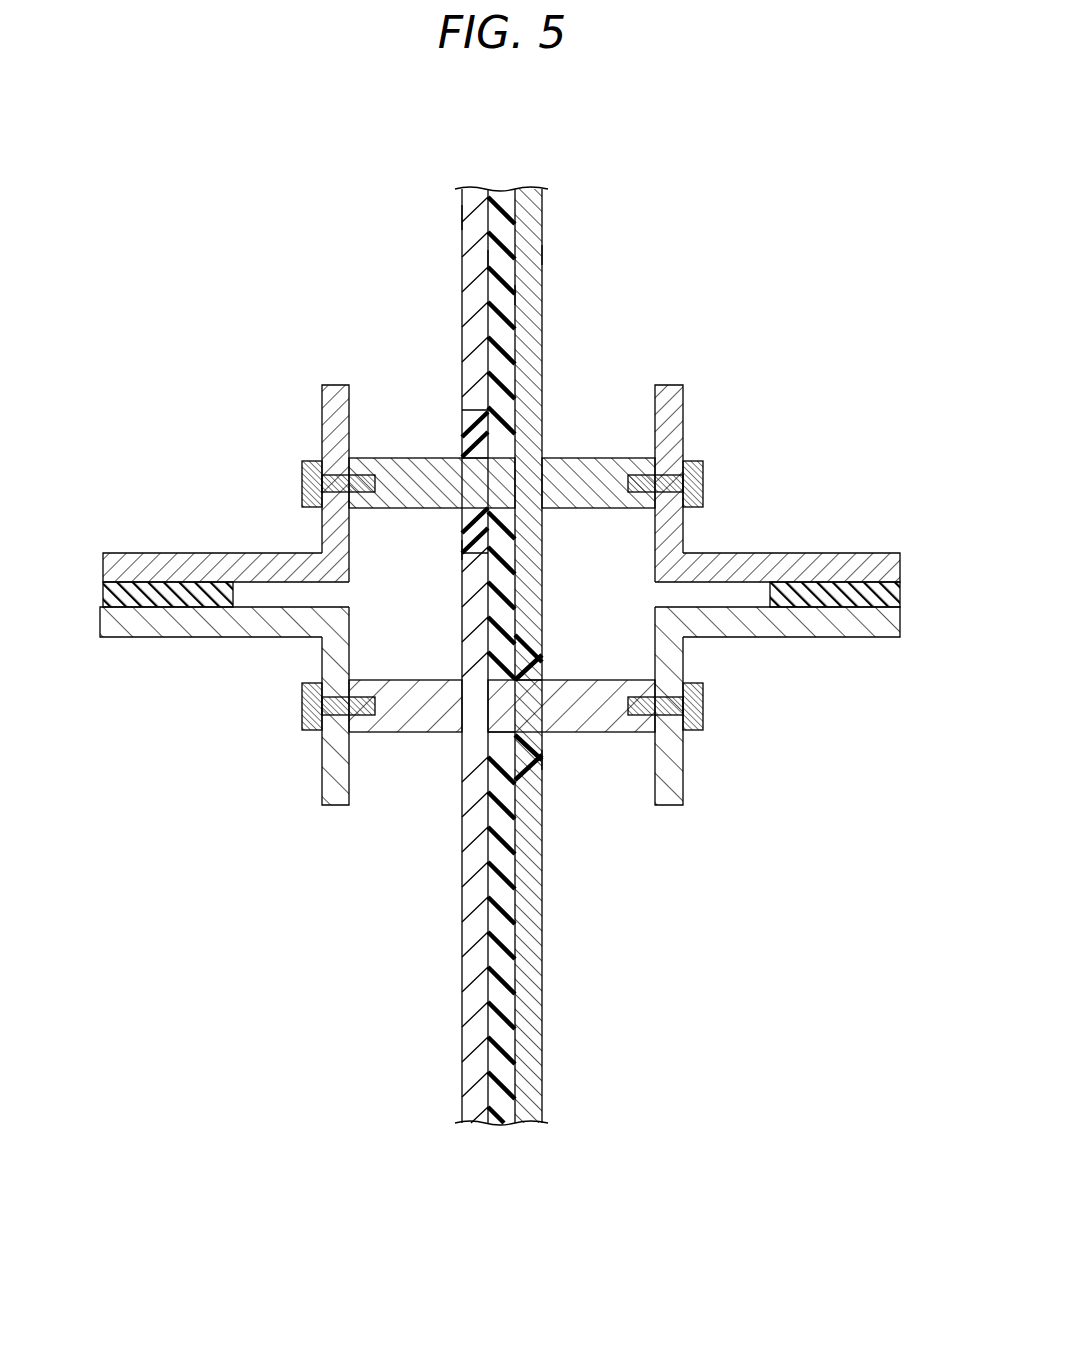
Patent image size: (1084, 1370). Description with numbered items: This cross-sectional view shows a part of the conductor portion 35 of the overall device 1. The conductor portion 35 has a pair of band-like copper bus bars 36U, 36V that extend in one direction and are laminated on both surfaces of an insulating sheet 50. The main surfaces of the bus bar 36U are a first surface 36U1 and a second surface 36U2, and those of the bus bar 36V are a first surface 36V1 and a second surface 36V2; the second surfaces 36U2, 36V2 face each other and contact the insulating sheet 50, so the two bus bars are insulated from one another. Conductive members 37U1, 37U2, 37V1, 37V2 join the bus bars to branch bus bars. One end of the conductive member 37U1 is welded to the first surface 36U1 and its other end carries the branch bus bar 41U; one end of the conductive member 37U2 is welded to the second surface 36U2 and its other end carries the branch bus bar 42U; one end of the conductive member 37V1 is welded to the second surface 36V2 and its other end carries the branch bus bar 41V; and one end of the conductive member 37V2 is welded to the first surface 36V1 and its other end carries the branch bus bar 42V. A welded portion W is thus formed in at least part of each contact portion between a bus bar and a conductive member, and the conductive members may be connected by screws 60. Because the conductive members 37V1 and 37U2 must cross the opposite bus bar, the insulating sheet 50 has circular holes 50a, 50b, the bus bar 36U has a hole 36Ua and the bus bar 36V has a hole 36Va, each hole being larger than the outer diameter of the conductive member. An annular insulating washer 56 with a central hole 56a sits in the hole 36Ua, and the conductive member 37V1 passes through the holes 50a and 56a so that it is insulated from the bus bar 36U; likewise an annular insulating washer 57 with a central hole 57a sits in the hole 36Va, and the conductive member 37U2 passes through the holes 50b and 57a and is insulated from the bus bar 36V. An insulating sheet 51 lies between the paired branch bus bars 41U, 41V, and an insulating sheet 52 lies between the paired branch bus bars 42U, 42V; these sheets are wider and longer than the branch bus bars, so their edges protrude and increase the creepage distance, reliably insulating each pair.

The rotary electric machine 1 is at (770, 160).
The conductor portion 35 is at (717, 328).
The bus bar 36U is at (474, 190).
The first surface 36U1 is at (462, 213).
The second surface 36U2 is at (498, 263).
The hole 36Ua is at (472, 549).
The bus bar 36V is at (528, 202).
The first surface 36V1 is at (543, 253).
The second surface 36V2 is at (512, 300).
The hole 36Va is at (539, 764).
The conductive member 37V1 is at (390, 473).
The conductive member 37V2 is at (603, 473).
The conductive member 37U1 is at (381, 722).
The conductive member 37U2 is at (612, 722).
The branch bus bar 41V is at (176, 565).
The branch bus bar 41U is at (178, 620).
The branch bus bar 42V is at (832, 562).
The branch bus bar 42U is at (827, 625).
The insulating sheet 50 is at (502, 200).
The hole 50a is at (490, 495).
The hole 50b is at (497, 717).
The insulating sheet 51 is at (105, 594).
The insulating sheet 52 is at (873, 590).
The insulating washer 56 is at (472, 425).
The hole 56a is at (463, 470).
The insulating washer 57 is at (540, 633).
The hole 57a is at (540, 697).
The screw 60 is at (315, 483).
The welded portion W is at (545, 455).